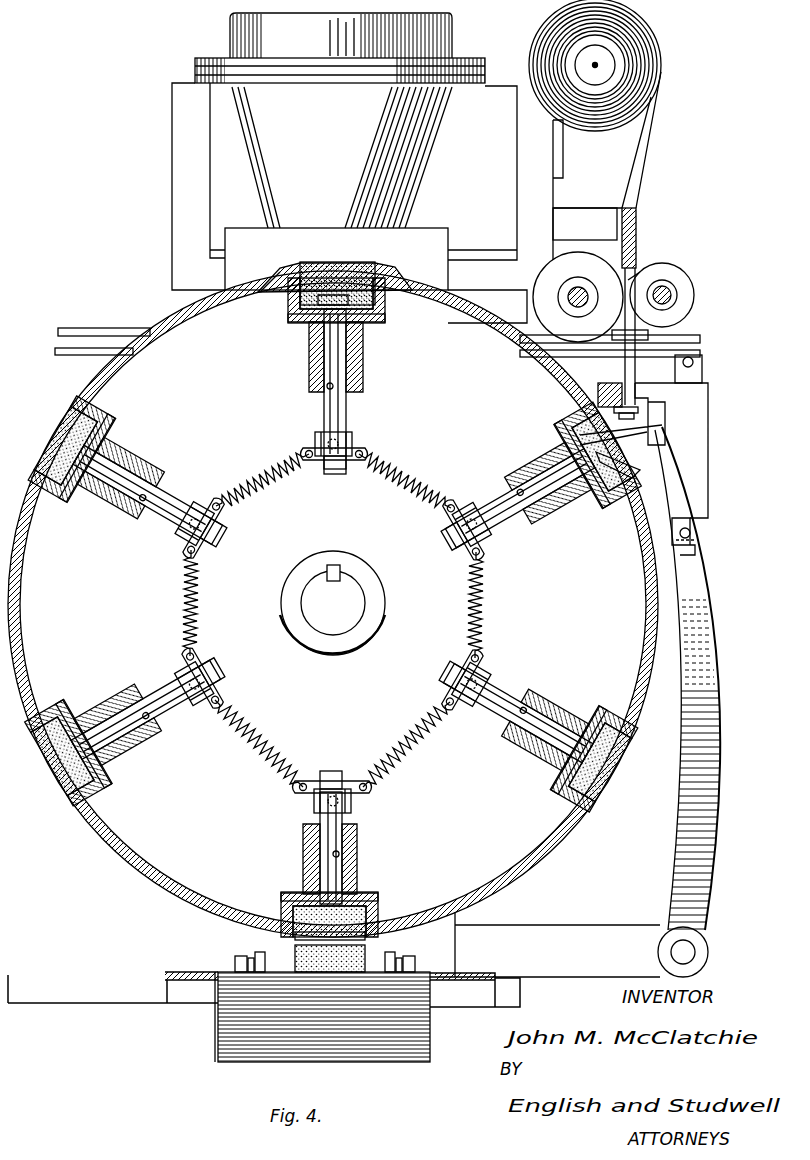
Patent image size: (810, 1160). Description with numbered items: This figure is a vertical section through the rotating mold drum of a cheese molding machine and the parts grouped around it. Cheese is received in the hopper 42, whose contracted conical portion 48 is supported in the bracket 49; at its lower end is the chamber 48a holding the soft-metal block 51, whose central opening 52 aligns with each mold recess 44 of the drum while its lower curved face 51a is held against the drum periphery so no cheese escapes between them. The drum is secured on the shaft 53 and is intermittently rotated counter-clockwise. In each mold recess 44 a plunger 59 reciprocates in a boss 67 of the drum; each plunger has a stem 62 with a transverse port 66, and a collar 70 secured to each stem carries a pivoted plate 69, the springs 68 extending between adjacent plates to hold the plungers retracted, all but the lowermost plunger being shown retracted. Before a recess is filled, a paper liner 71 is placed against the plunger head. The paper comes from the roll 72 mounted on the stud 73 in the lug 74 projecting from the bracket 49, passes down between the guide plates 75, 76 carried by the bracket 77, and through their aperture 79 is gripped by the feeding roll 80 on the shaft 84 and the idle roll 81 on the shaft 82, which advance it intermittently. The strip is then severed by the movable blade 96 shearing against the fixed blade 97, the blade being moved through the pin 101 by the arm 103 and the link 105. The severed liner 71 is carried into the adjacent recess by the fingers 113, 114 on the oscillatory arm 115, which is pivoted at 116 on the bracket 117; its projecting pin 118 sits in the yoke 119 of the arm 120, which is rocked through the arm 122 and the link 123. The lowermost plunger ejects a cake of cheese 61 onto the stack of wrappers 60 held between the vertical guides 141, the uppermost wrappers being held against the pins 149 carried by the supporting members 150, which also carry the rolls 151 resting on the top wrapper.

The hopper 42 is at (430, 38).
The mold recesses 44 is at (290, 300).
The conical portion 48 is at (425, 155).
The chamber 48a is at (438, 240).
The bracket 49 is at (172, 180).
The member or block 51 is at (295, 268).
The lower curved face 51a is at (270, 298).
The central opening 52 is at (360, 266).
The shaft 53 is at (332, 603).
The plunger 59 is at (372, 320).
The stack of wrappers 60 is at (430, 1028).
The cake of cheese 61 is at (366, 938).
The stem 62 is at (334, 472).
The transverse port 66 is at (340, 386).
The boss 67 is at (364, 372).
The springs 68 is at (414, 770).
The plates 69 is at (312, 460).
The collars 70 is at (352, 438).
The paper liner or sheet 71 is at (318, 300).
The roll of paper 72 is at (640, 98).
The stud 73 is at (600, 65).
The lug 74 is at (564, 152).
The guide plate 75 is at (638, 218).
The guide plate 76 is at (615, 240).
The bracket 77 is at (568, 210).
The aperture 79 is at (640, 275).
The feeding roll 80 is at (578, 297).
The idle roll 81 is at (696, 300).
The shaft 82 is at (670, 292).
The shaft 84 is at (568, 297).
The movable blade 96 is at (640, 409).
The fixed blade 97 is at (605, 392).
The pin 101 is at (636, 418).
The arm 103 is at (650, 335).
The link 105 is at (132, 328).
The finger 113 is at (708, 440).
The finger 114 is at (642, 467).
The oscillatory arm 115 is at (700, 608).
The pivot 116 is at (695, 952).
The bracket 117 is at (625, 930).
The projecting pin 118 is at (692, 533).
The yoke 119 is at (692, 522).
The arm 120 is at (696, 548).
The arm 122 is at (702, 358).
The link 123 is at (80, 356).
The vertical guides 141 is at (215, 1034).
The pins 149 is at (260, 952).
The supporting members 150 is at (235, 957).
The rolls 151 is at (250, 950).